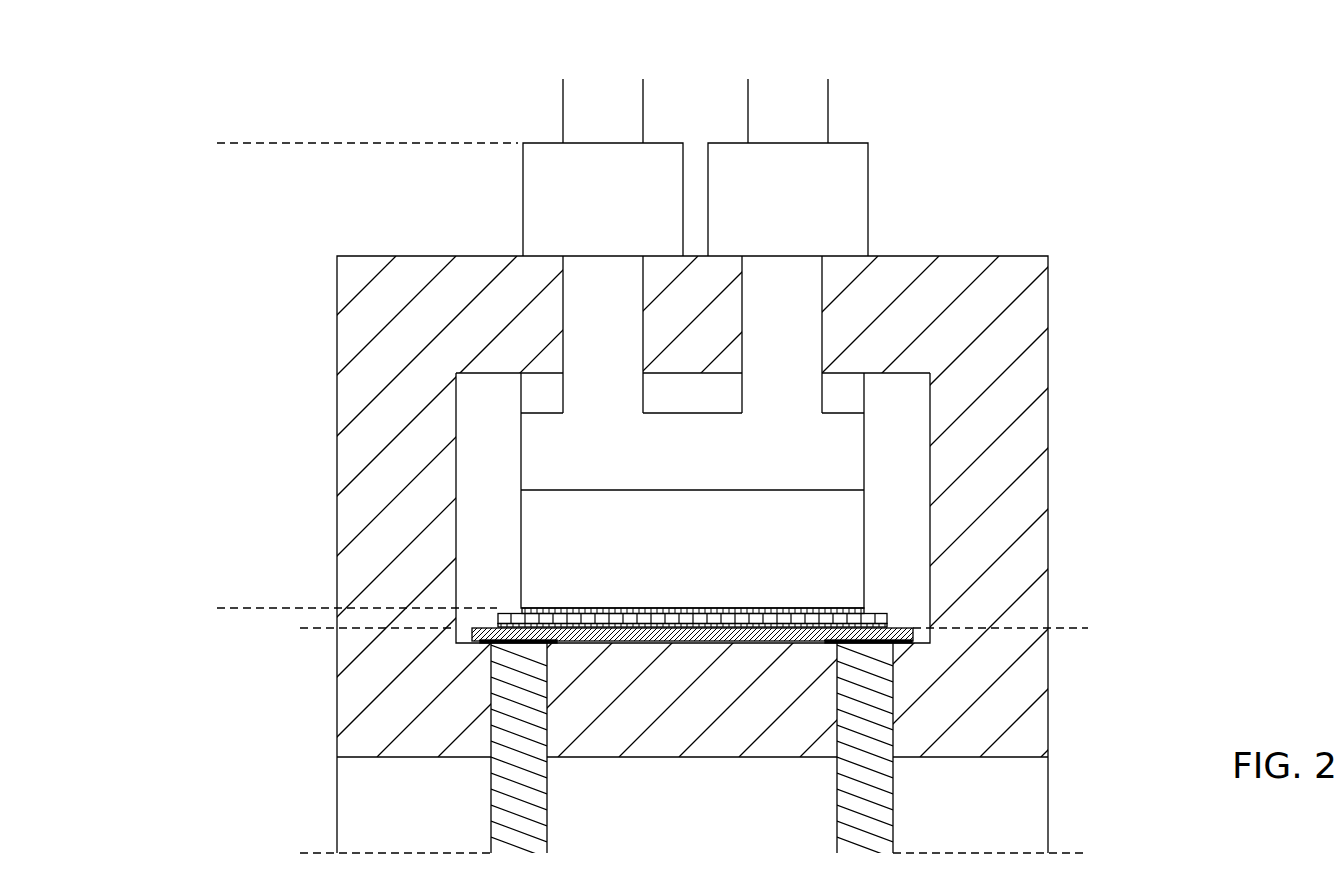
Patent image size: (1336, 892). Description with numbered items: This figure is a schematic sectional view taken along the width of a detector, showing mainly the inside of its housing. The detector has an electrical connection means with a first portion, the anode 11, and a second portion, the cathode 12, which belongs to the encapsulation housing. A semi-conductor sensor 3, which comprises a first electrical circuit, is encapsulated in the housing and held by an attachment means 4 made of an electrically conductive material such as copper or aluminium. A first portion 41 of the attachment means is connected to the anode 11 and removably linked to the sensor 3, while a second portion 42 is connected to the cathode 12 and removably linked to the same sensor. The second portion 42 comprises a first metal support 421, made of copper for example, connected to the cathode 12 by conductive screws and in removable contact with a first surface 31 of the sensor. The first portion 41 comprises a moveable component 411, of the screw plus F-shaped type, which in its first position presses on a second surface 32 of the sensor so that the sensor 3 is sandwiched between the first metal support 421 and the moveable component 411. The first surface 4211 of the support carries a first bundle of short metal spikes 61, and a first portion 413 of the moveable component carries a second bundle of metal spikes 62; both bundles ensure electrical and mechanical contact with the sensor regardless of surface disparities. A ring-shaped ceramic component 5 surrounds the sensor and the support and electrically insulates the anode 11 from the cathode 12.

The anode 11 is at (591, 121).
The attachment means 4 is at (850, 215).
The ceramic component 5 is at (1023, 312).
The first portion of the attachment means 41 is at (217, 143).
The moveable component 411 is at (542, 505).
The first portion of the moveable component 413 is at (840, 613).
The second surface of the sensor 32 is at (505, 608).
The second bundle of metal spikes 62 is at (723, 610).
The first surface of the sensor 31 is at (808, 610).
The first surface of the first support 4211 is at (481, 628).
The semi-conductor sensor 3 is at (887, 615).
The second portion of the attachment means 42 is at (300, 629).
The first bundle of short metal spikes 61 is at (627, 627).
The first metal support 421 is at (658, 641).
The cathode 12 is at (517, 755).